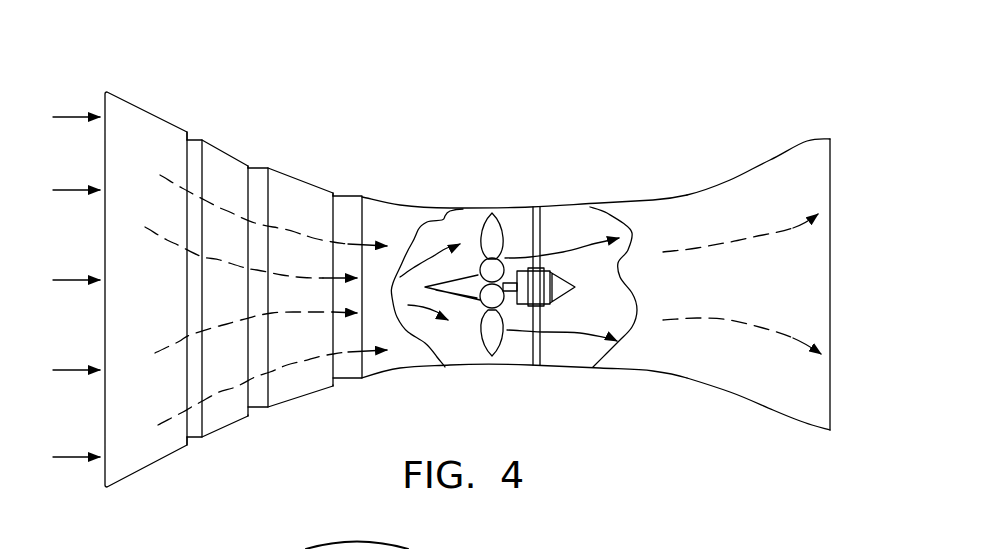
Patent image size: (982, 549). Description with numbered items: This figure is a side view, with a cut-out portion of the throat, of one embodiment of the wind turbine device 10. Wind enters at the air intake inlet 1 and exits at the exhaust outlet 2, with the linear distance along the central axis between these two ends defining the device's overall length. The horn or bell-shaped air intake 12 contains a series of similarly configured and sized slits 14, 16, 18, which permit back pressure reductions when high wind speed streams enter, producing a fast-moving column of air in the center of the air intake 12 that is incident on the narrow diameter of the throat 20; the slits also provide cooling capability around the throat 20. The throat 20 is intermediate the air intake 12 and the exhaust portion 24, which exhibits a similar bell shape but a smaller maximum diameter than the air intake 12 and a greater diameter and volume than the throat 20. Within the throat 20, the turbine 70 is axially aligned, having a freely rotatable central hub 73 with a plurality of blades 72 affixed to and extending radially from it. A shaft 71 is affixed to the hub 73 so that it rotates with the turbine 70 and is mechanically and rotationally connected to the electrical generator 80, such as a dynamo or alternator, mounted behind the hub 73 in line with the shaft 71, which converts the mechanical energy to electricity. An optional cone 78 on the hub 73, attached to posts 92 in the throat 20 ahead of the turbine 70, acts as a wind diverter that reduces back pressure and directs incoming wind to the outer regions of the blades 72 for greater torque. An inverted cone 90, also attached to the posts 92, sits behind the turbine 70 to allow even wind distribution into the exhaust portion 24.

The air intake inlet 1 is at (76, 287).
The exhaust outlet 2 is at (754, 284).
The wind turbine device 10 is at (251, 295).
The air intake 12 is at (215, 470).
The slit 14 is at (195, 138).
The slit 16 is at (257, 167).
The slit 18 is at (348, 196).
The throat 20 is at (535, 404).
The exhaust portion 24 is at (725, 156).
The turbine 70 is at (507, 205).
The shaft 71 is at (504, 282).
The blades 72 is at (492, 228).
The hub 73 is at (478, 259).
The cone 78 is at (463, 287).
The electrical generator 80 is at (548, 305).
The inverted cone 90 is at (568, 277).
The posts 92 is at (535, 206).